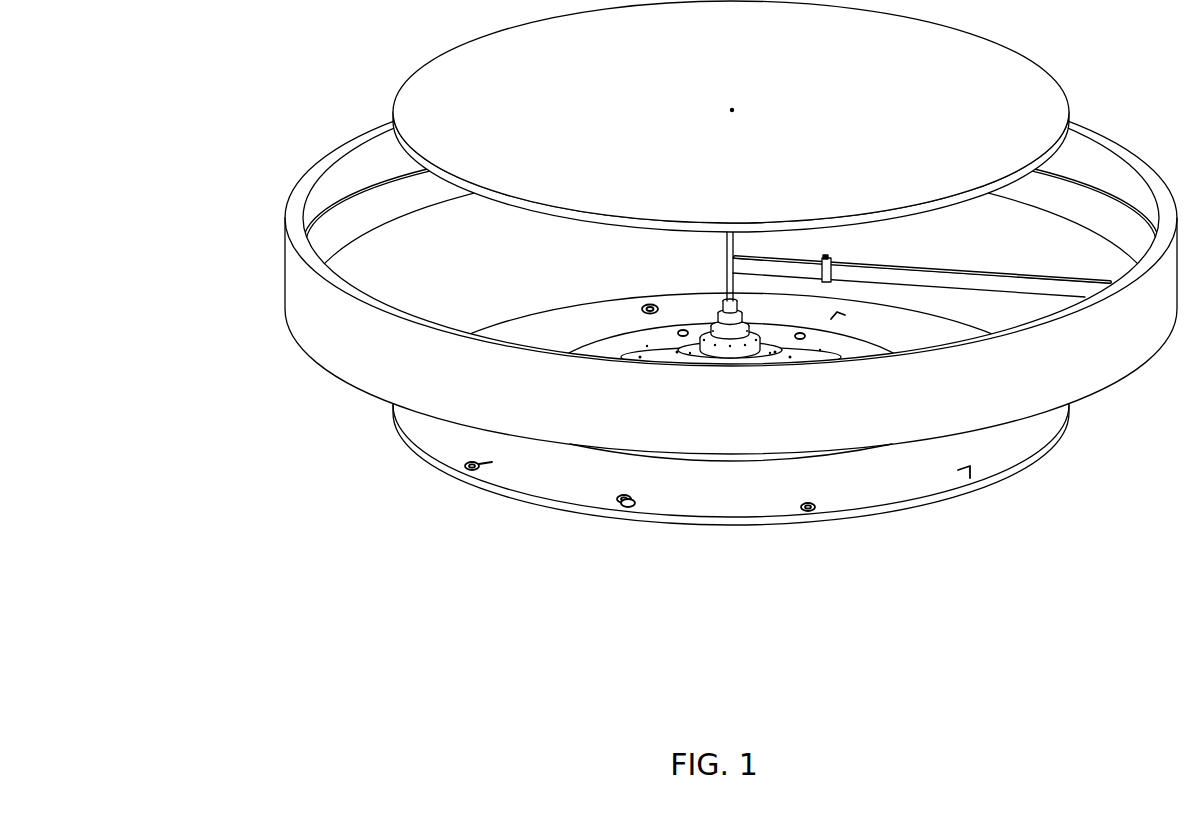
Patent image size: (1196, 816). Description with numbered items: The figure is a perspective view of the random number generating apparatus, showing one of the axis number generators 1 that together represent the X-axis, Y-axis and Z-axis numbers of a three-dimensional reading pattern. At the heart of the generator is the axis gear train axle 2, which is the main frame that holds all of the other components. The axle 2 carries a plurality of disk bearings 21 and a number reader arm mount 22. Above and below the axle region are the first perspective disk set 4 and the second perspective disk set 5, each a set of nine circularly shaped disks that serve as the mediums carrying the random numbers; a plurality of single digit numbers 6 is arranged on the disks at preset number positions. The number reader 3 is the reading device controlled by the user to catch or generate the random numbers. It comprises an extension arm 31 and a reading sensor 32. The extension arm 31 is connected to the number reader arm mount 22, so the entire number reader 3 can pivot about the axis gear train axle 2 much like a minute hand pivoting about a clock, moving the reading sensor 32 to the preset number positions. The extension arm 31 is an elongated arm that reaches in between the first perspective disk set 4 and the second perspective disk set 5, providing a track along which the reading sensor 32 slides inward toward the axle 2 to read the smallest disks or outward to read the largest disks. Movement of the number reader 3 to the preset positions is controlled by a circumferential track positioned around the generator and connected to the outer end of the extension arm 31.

The axis number generator 1 is at (394, 16).
The axis gear train axle 2 is at (727, 241).
The disk bearings 21 is at (729, 110).
The number reader arm mount 22 is at (742, 257).
The number reader 3 is at (922, 254).
The extension arm 31 is at (920, 278).
The reading sensor 32 is at (830, 266).
The first perspective disk set 4 is at (420, 88).
The second perspective disk set 5 is at (418, 439).
The single digit numbers 6 is at (643, 308).